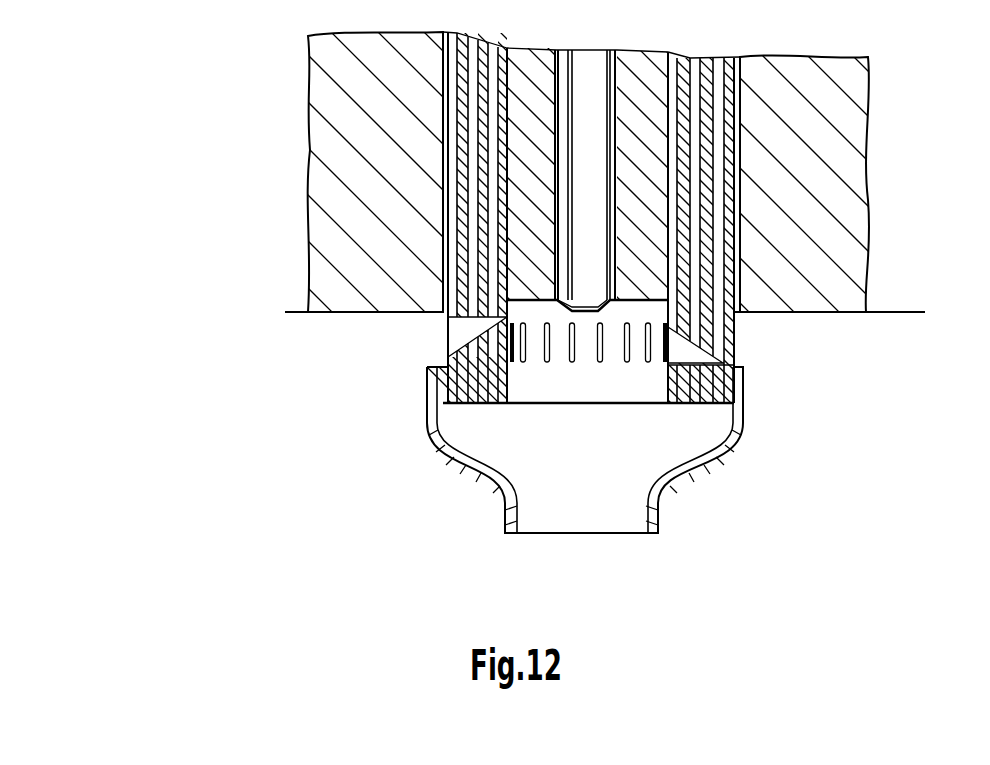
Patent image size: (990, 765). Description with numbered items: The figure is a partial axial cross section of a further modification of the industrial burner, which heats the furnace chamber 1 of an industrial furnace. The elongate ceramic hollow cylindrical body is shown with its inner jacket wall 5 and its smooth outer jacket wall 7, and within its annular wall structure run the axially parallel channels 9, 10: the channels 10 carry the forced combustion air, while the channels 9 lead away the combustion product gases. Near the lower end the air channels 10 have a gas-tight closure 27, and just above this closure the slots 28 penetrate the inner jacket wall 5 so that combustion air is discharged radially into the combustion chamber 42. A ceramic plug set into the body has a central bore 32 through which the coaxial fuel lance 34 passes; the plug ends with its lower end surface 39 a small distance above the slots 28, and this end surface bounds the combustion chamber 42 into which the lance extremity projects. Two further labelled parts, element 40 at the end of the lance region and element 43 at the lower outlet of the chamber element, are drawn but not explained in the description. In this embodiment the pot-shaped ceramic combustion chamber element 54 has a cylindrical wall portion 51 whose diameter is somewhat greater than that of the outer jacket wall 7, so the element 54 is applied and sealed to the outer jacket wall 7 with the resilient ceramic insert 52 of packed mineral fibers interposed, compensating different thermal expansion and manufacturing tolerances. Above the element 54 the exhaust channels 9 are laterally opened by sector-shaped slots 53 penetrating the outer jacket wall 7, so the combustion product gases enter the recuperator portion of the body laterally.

The furnace chamber 1 is at (762, 527).
The inner jacket wall 5 is at (704, 62).
The outer jacket wall 7 is at (726, 349).
The channels 9 is at (440, 312).
The channels 10 is at (728, 320).
The gas-tight closure 27 is at (722, 410).
The slots 28 is at (635, 363).
The central bore 32 is at (555, 120).
The fuel lance 34 is at (590, 200).
The lower end surface 39 is at (524, 295).
The tube tip 40 is at (587, 296).
The combustion chamber 42 is at (553, 385).
The stem outlet 43 is at (570, 512).
The cylindrical wall portion 51 is at (426, 367).
The resilient ceramic insert 52 is at (433, 425).
The sector-shaped slots 53 is at (448, 343).
The ceramic combustion chamber element 54 is at (738, 432).